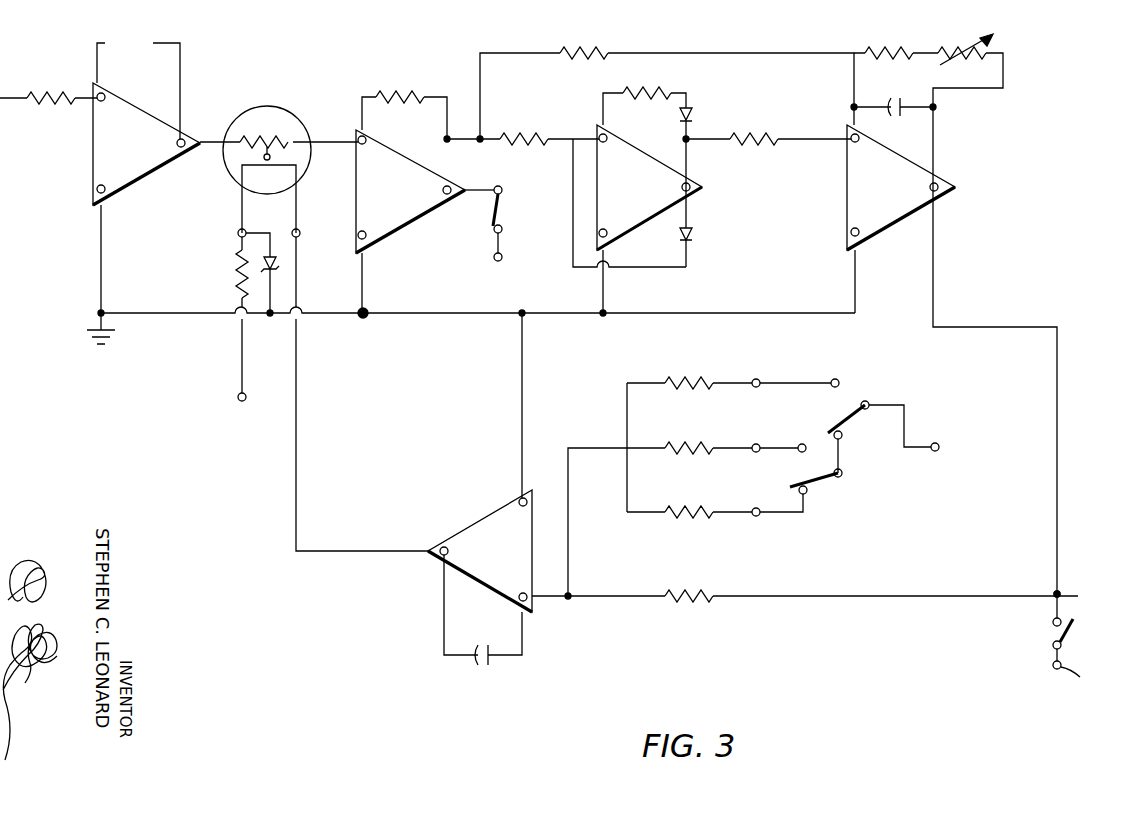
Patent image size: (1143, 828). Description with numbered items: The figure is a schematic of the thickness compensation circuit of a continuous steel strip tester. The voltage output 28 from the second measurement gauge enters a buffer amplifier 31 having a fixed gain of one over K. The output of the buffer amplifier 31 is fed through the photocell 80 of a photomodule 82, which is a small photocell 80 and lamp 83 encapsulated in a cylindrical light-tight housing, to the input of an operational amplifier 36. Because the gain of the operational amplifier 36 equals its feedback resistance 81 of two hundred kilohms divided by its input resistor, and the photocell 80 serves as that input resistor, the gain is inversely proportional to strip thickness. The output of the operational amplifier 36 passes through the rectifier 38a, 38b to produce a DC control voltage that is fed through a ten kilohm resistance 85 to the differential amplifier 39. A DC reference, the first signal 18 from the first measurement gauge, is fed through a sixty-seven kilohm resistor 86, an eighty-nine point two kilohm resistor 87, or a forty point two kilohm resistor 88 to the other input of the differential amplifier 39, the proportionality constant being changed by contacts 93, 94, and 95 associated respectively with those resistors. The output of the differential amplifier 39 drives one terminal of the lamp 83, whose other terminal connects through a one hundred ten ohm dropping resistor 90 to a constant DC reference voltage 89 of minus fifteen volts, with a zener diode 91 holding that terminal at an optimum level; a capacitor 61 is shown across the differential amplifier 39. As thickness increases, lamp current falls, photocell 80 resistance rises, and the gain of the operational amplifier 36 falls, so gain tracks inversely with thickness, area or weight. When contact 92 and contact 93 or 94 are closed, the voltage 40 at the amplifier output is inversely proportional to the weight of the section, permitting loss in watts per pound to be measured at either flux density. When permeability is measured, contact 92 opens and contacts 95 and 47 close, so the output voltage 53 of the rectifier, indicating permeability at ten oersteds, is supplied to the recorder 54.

The voltage output 28 is at (68, 95).
The buffer amplifier 31 is at (137, 175).
The photomodule 82 is at (287, 104).
The photocell 80 is at (254, 149).
The lamp 83 is at (280, 190).
The dropping resistor 90 is at (240, 268).
The zener diode 91 is at (280, 266).
The constant DC reference voltage 89 is at (239, 401).
The feedback resistance 81 is at (414, 92).
The operational amplifier 36 is at (420, 204).
The contact 92 is at (502, 230).
The output voltage 40 is at (502, 260).
The rectifier 38a is at (655, 200).
The rectifier 38b is at (870, 200).
The differential amplifier 39 is at (506, 560).
The capacitor 61 is at (492, 662).
The resistance 85 is at (693, 600).
The resistor 86 is at (678, 510).
The resistor 87 is at (678, 448).
The resistor 88 is at (678, 383).
The contact 93 is at (806, 490).
The contact 94 is at (802, 444).
The contact 95 is at (838, 380).
The first signal 18 is at (939, 447).
The output voltage 53 is at (1060, 594).
The contact 47 is at (1053, 623).
The recorder 54 is at (1076, 673).